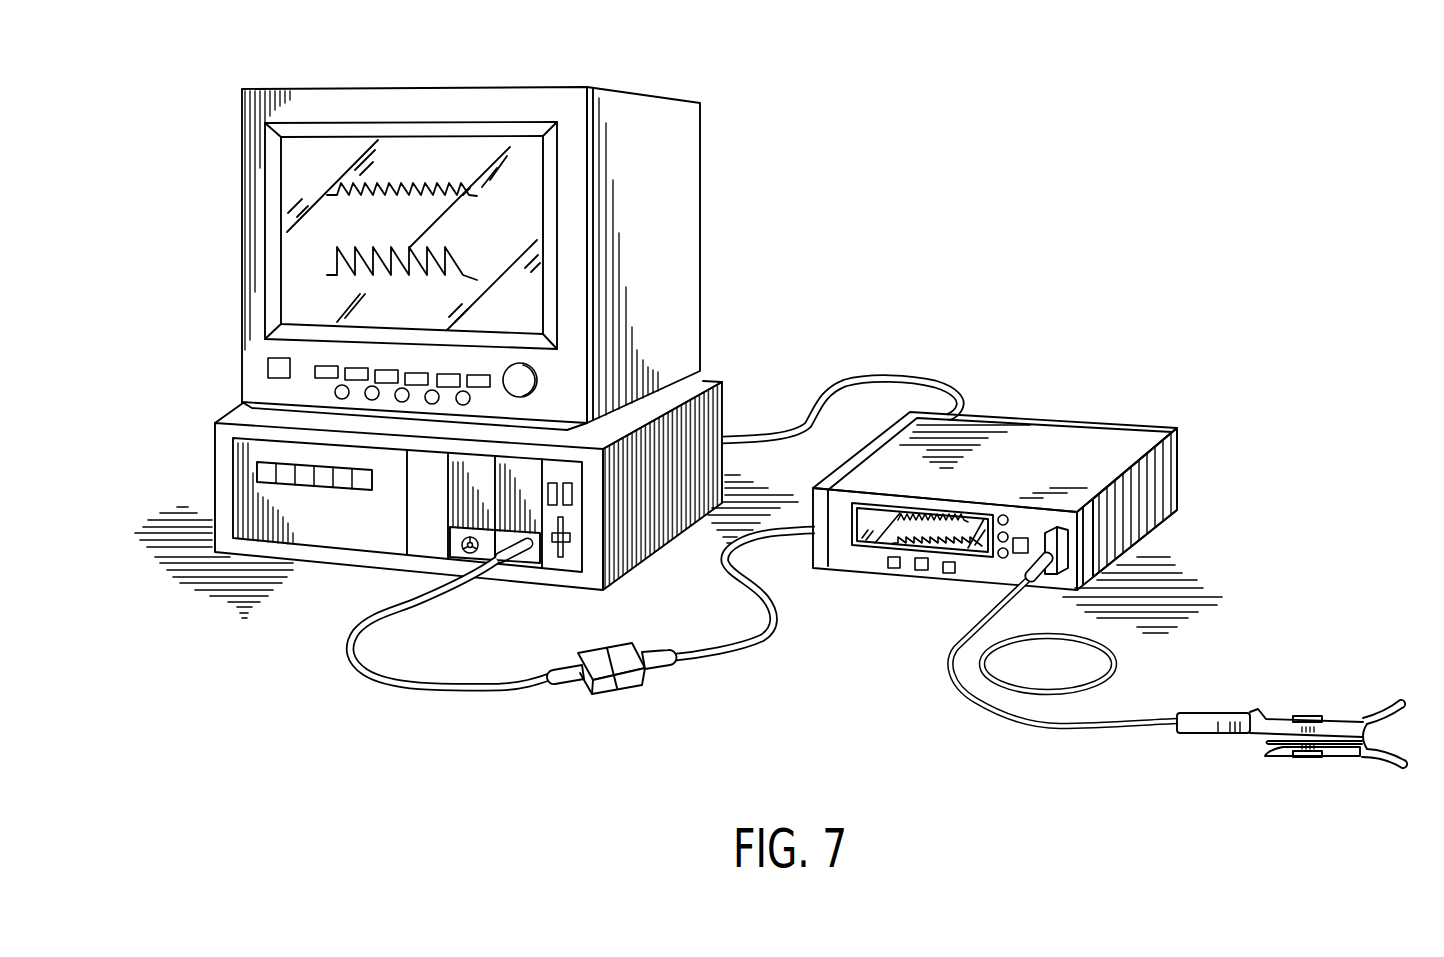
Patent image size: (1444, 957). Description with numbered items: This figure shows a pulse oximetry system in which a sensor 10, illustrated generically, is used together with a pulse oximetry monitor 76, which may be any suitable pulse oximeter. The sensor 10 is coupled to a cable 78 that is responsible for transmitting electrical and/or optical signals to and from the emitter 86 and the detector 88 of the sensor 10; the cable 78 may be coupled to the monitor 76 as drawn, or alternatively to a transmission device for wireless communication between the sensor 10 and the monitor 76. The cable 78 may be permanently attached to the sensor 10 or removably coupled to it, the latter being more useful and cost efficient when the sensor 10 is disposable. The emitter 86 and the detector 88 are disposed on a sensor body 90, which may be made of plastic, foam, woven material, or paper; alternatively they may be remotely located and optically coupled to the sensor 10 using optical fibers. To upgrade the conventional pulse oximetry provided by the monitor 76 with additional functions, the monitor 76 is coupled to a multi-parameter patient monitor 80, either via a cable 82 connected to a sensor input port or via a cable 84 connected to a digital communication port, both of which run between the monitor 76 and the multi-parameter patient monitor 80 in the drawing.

The sensor 10 is at (1383, 754).
The pulse oximetry monitor 76 is at (1073, 422).
The cable 78 is at (990, 712).
The multi-parameter patient monitor 80 is at (647, 102).
The cable 82 is at (705, 656).
The cable 84 is at (908, 378).
The emitter 86 is at (1305, 716).
The detector 88 is at (1310, 757).
The sensor body 90 is at (1280, 750).